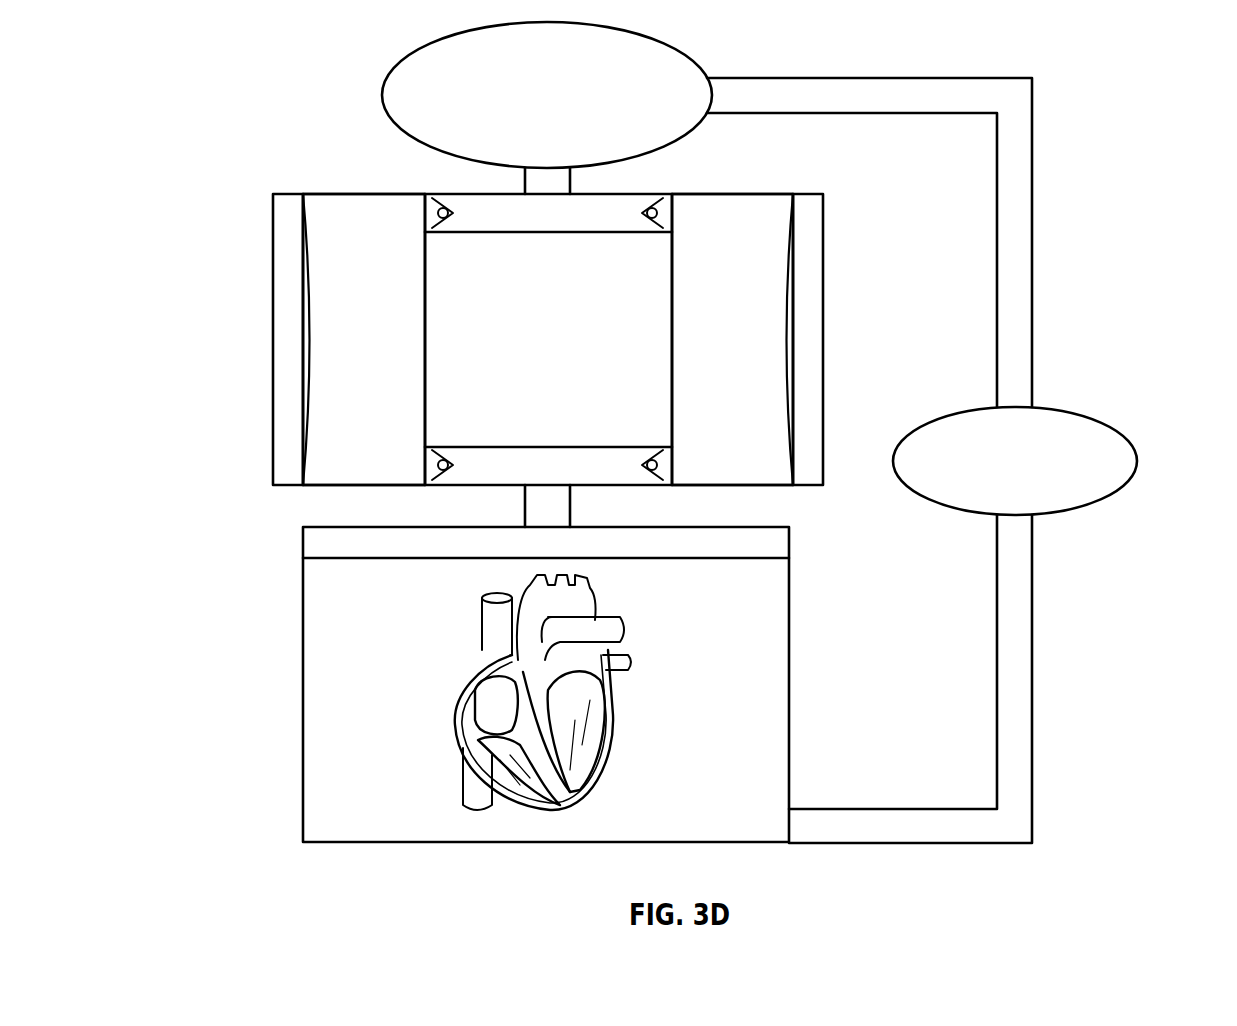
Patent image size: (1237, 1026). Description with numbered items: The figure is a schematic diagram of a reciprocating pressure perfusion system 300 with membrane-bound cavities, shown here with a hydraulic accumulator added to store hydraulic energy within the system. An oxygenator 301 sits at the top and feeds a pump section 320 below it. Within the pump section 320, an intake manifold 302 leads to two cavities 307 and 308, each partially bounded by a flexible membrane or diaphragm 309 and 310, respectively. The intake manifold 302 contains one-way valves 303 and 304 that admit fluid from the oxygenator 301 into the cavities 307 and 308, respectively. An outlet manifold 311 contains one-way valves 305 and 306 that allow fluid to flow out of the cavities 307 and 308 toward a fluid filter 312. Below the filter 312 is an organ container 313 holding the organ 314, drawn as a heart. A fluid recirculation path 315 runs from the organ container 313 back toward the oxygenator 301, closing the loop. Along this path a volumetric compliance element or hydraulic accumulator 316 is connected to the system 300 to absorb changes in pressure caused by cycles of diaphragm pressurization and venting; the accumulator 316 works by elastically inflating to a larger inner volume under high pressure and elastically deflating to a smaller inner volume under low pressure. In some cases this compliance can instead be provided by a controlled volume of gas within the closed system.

The reciprocating pressure perfusion system 300 is at (1135, 77).
The oxygenator 301 is at (440, 42).
The intake manifold 302 is at (497, 196).
The one-way valve 303 is at (448, 219).
The one-way valve 304 is at (647, 219).
The one-way valve 305 is at (446, 460).
The one-way valve 306 is at (648, 460).
The cavity 307 is at (387, 353).
The cavity 308 is at (755, 353).
The flexible membrane or diaphragm 309 is at (305, 323).
The flexible membrane or diaphragm 310 is at (788, 322).
The outlet manifold 311 is at (522, 480).
The fluid filter 312 is at (312, 546).
The organ container 313 is at (303, 626).
The organ 314 is at (470, 745).
The fluid recirculation path 315 is at (1023, 686).
The hydraulic accumulator 316 is at (1048, 408).
The pump section 320 is at (190, 193).